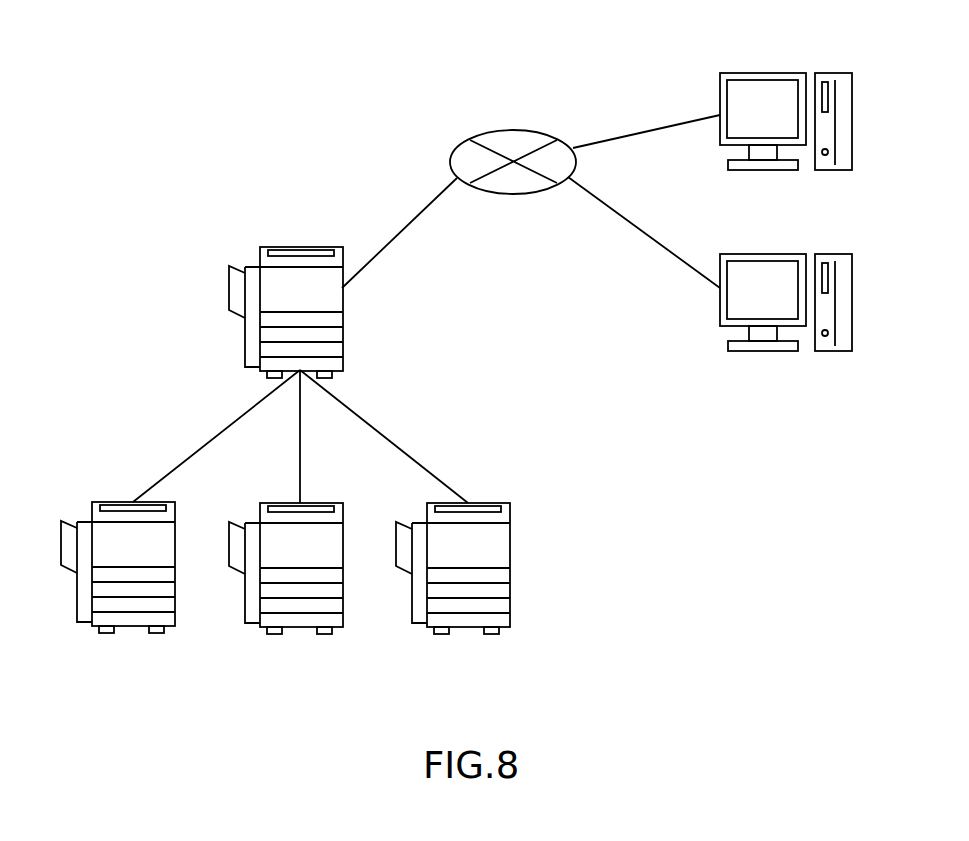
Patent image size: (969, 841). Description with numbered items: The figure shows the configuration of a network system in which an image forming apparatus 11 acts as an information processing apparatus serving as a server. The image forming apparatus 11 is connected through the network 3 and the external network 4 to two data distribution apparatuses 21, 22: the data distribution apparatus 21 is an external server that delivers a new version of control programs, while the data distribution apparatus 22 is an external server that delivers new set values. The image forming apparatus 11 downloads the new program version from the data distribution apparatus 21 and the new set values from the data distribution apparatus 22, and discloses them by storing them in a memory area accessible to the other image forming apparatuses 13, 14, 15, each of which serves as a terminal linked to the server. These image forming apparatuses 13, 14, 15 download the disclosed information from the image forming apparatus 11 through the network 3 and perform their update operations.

The network 3 is at (400, 230).
The external network 4 is at (512, 130).
The image forming apparatus 11 is at (305, 247).
The image forming apparatus 13 is at (103, 502).
The image forming apparatus 14 is at (320, 503).
The image forming apparatus 15 is at (485, 503).
The data distribution apparatus 21 is at (767, 73).
The data distribution apparatus 22 is at (768, 254).